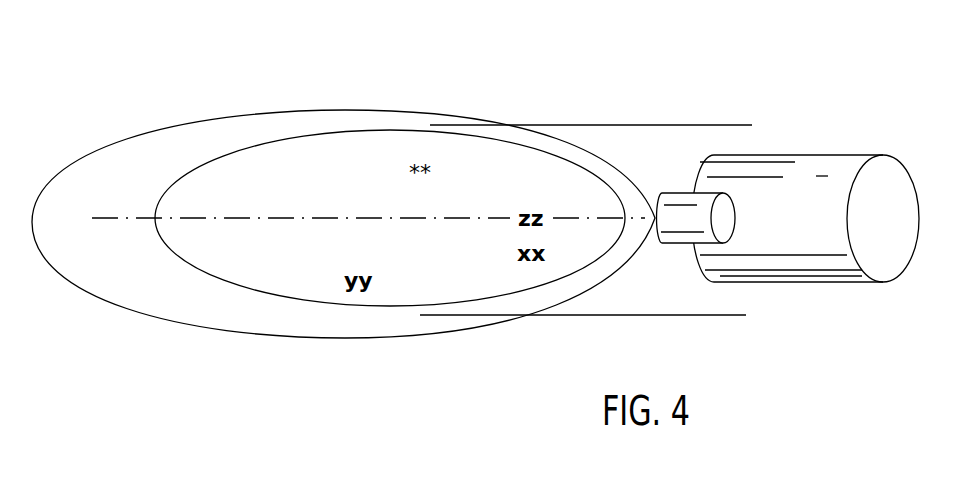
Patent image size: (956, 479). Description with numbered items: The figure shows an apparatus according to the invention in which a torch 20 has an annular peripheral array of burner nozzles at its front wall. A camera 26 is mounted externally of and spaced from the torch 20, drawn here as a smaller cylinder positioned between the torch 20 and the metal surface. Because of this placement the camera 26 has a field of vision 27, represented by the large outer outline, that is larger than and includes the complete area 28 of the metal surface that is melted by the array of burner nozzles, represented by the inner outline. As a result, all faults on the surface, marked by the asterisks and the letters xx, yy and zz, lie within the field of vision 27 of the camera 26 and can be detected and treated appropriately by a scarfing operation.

The torch 20 is at (796, 192).
The camera 26 is at (678, 221).
The field of vision 27 is at (285, 114).
The complete area of the metal surface that is melted 28 is at (233, 262).